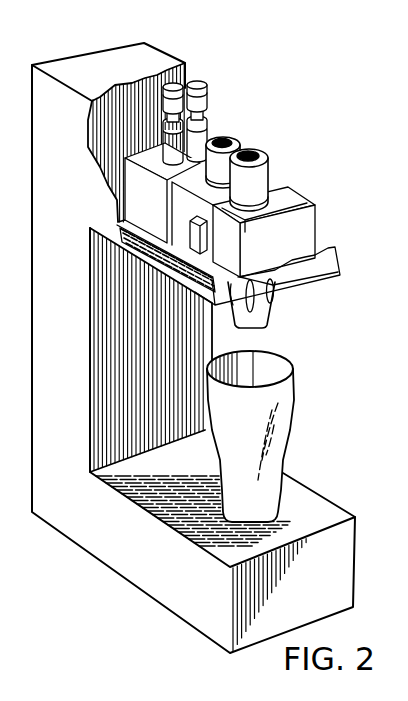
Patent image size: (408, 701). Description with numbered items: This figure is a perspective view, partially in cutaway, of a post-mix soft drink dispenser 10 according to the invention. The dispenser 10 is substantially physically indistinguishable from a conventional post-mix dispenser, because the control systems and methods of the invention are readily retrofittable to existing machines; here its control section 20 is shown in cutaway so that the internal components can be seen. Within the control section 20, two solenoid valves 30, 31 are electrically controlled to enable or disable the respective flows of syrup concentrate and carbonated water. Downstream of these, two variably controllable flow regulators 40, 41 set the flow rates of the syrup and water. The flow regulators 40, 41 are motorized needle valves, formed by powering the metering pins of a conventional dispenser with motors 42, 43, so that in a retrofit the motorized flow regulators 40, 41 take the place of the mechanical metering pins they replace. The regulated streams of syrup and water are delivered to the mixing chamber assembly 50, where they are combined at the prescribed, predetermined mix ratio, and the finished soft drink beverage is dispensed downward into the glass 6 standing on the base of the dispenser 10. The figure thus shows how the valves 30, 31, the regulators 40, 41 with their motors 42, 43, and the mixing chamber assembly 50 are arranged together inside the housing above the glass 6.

The glass 6 is at (291, 373).
The post-mix soft drink dispenser 10 is at (328, 206).
The control section 20 is at (233, 120).
The solenoid valve 30 is at (275, 171).
The solenoid valve 31 is at (262, 150).
The variably controllable flow regulator 40 is at (96, 100).
The variably controllable flow regulator 41 is at (225, 129).
The motor 42 is at (172, 85).
The motor 43 is at (199, 82).
The mixing chamber assembly 50 is at (265, 318).